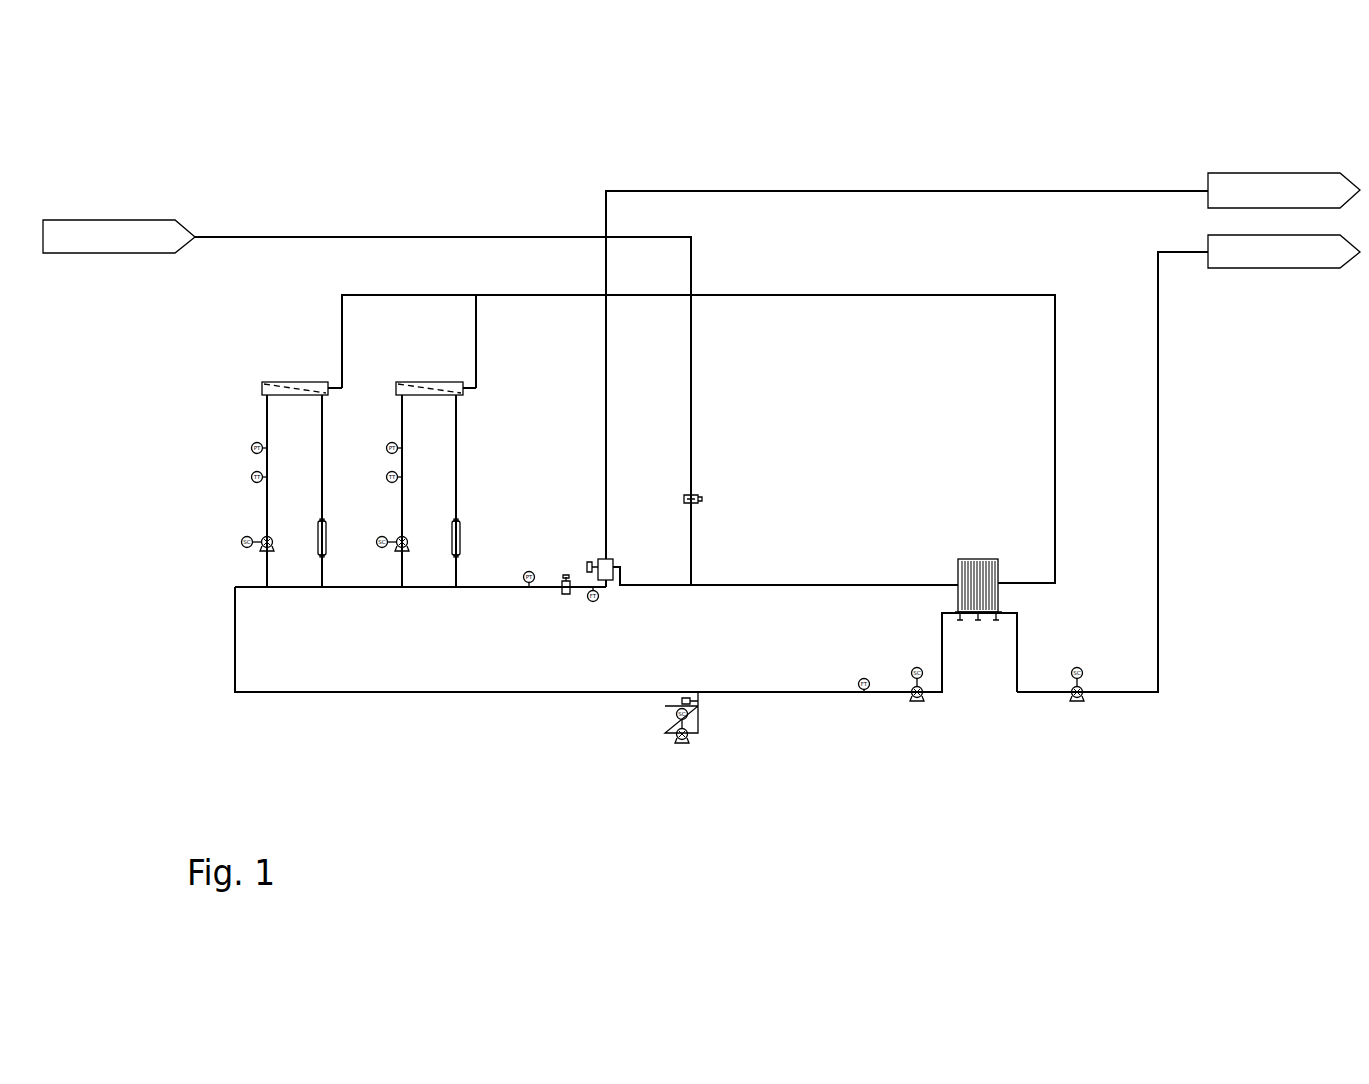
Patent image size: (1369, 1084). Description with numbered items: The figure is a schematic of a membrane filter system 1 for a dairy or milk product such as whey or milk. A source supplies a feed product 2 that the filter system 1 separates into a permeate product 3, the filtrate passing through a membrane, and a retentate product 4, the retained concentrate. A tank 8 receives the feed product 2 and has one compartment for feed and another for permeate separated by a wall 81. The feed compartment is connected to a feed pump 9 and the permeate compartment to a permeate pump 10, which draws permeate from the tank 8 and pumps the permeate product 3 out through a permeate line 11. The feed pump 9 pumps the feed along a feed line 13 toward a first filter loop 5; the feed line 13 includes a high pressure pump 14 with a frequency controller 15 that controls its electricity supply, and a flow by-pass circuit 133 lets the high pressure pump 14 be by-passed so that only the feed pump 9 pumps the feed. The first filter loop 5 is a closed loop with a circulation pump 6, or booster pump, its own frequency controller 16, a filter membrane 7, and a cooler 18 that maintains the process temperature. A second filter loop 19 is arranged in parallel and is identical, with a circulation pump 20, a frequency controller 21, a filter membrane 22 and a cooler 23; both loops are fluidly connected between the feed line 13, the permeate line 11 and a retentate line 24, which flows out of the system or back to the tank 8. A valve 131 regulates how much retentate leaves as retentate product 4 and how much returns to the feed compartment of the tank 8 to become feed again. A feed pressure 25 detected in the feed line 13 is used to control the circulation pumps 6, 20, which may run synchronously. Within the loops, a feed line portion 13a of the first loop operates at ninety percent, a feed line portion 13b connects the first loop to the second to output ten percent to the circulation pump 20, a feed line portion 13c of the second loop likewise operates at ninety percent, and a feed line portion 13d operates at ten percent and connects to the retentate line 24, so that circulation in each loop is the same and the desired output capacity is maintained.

The filter system 1 is at (303, 198).
The feed product 2 is at (136, 220).
The permeate product 3 is at (1230, 270).
The retentate product 4 is at (1232, 173).
The filter loop 5 is at (258, 461).
The circulation pump 6 is at (263, 538).
The filter membrane 7 is at (262, 388).
The tank 8 is at (1010, 571).
The feed pump 9 is at (921, 702).
The permeate pump 10 is at (1078, 703).
The permeate line 11 is at (893, 294).
The feed line 13 is at (235, 640).
The feed line portion 13a is at (297, 588).
The feed line portion 13b is at (360, 588).
The feed line portion 13c is at (438, 588).
The feed line portion 13d is at (497, 588).
The high pressure pump 14 is at (679, 740).
The frequency controller 15 is at (685, 719).
The frequency controller 16 is at (241, 546).
The cooler 18 is at (299, 520).
The second filter loop 19 is at (452, 461).
The circulation pump 20 is at (398, 538).
The frequency controller 21 is at (379, 548).
The filter membrane 22 is at (410, 388).
The cooler 23 is at (461, 545).
The retentate line 24 is at (912, 190).
The feed pressure 25 is at (529, 570).
The wall 81 is at (985, 600).
The valve 131 is at (614, 562).
The flow by-pass circuit 133 is at (647, 734).